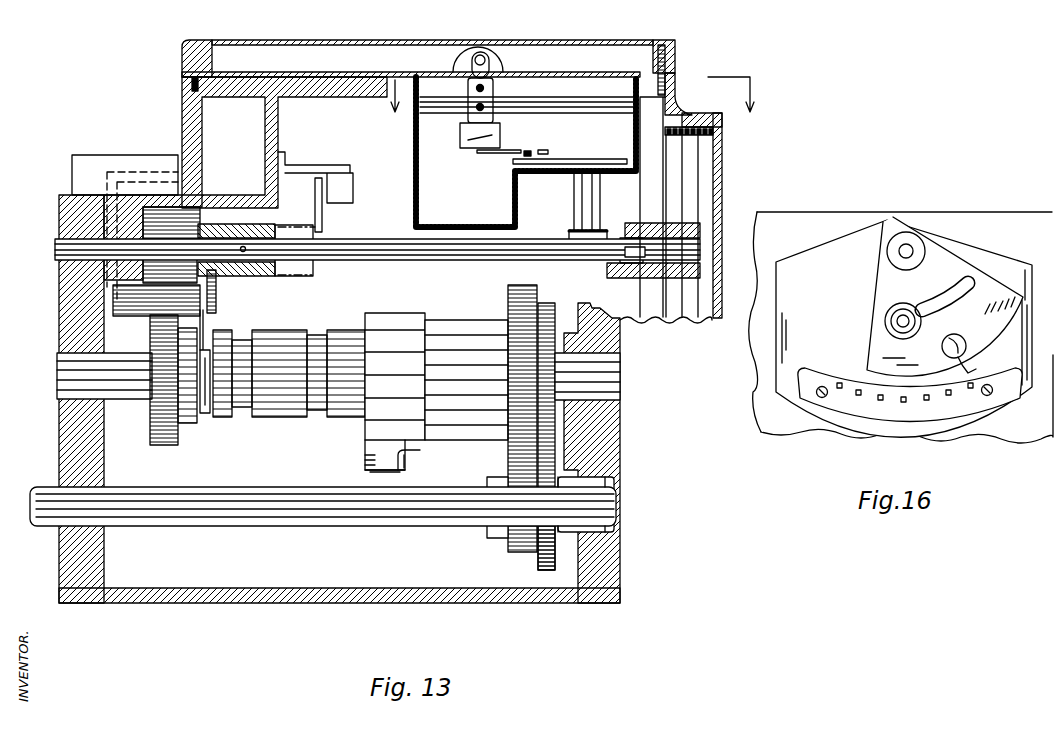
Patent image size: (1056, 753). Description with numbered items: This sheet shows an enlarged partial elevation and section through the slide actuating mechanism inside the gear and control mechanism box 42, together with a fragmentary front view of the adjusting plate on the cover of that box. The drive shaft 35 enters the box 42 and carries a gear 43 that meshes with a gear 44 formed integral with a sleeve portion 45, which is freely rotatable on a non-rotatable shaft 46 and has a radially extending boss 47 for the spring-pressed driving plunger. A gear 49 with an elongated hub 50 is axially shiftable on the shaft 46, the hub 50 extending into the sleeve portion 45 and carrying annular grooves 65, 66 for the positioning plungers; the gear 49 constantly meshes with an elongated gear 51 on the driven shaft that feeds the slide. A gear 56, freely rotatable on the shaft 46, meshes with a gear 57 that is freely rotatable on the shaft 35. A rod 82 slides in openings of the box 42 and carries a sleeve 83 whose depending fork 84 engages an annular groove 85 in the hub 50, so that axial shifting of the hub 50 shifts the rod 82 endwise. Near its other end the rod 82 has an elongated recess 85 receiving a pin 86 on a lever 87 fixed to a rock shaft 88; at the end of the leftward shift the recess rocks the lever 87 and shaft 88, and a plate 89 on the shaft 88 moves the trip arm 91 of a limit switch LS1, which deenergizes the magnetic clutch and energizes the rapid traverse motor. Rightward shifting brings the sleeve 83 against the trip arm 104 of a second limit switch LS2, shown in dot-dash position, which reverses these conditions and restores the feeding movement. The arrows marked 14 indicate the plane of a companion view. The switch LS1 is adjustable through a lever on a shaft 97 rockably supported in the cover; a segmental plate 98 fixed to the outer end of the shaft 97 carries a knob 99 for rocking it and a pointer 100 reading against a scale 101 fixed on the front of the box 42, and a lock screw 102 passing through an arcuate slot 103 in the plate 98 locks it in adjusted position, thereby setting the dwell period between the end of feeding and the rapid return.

In FIG. 13, the section line 14- 14 is at (562, 108).
In FIG. 13, the drive shaft 35 is at (279, 520).
In FIG. 13, the gear and control mechanism box 42 is at (721, 204).
In FIG. 13, the gear 43 is at (503, 540).
In FIG. 13, the gear 44 is at (508, 300).
In FIG. 13, the sleeve portion 45 is at (484, 375).
In FIG. 13, the non-rotatable shaft 46 is at (604, 378).
In FIG. 13, the radially extending boss 47 is at (418, 454).
In FIG. 13, the gear 49 is at (162, 445).
In FIG. 13, the elongated hub 50 is at (286, 330).
In FIG. 13, the elongated gear 51 is at (118, 317).
In FIG. 13, the gear 56 is at (540, 293).
In FIG. 13, the gear 57 is at (538, 566).
In FIG. 13, the annular groove 65 is at (240, 330).
In FIG. 13, the annular groove 66 is at (316, 335).
In FIG. 13, the rod 82 is at (402, 257).
In FIG. 13, the sleeve 83 is at (252, 278).
In FIG. 13, the depending fork 84 is at (216, 314).
In FIG. 13, the annular groove 85 is at (205, 415).
In FIG. 13, the pin 86 is at (619, 229).
In FIG. 13, the lever 87 is at (571, 232).
In FIG. 13, the rock shaft 88 is at (582, 201).
In FIG. 13, the plate 89 is at (612, 162).
In FIG. 13, the trip arm 91 is at (500, 154).
In FIG. 13, the limit switch LS1 is at (496, 133).
In FIG. 13, the limit switch LS2 is at (354, 192).
In FIG. 13, the trip arm 104 is at (322, 206).
In FIG. 16, the shaft 97 is at (907, 240).
In FIG. 16, the segmental plate 98 is at (947, 258).
In FIG. 16, the knob 99 is at (963, 343).
In FIG. 16, the pointer 100 is at (973, 368).
In FIG. 16, the scale 101 is at (980, 413).
In FIG. 16, the lock screw 102 is at (904, 303).
In FIG. 16, the arcuate slot 103 is at (976, 285).